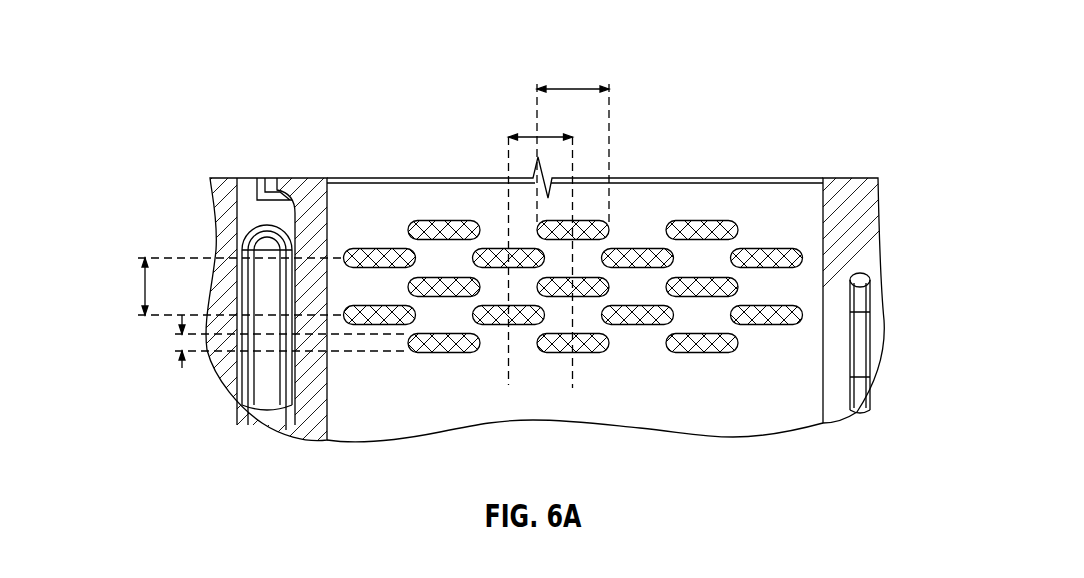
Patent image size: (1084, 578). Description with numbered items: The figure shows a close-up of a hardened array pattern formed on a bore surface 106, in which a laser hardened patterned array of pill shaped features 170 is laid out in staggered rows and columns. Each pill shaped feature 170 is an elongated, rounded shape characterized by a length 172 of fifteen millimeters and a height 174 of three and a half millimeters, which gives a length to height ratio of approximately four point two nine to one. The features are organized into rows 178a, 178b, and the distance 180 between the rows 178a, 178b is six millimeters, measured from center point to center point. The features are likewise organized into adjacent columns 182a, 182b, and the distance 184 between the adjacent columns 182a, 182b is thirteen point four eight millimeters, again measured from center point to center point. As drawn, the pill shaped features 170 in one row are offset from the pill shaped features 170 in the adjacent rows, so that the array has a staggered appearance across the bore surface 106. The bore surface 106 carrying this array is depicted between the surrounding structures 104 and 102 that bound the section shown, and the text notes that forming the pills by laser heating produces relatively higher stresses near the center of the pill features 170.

The second housing wall 102 is at (850, 200).
The first housing wall / assembly 104 is at (375, 137).
The bore surface 106 is at (458, 202).
The pill shaped features 170 is at (597, 222).
The length 172 is at (573, 86).
The height 174 is at (183, 362).
The row 178a is at (183, 257).
The row 178b is at (177, 316).
The distance between rows 180 is at (143, 288).
The column 182a is at (508, 352).
The column 182b is at (573, 363).
The distance between adjacent columns 184 is at (520, 137).